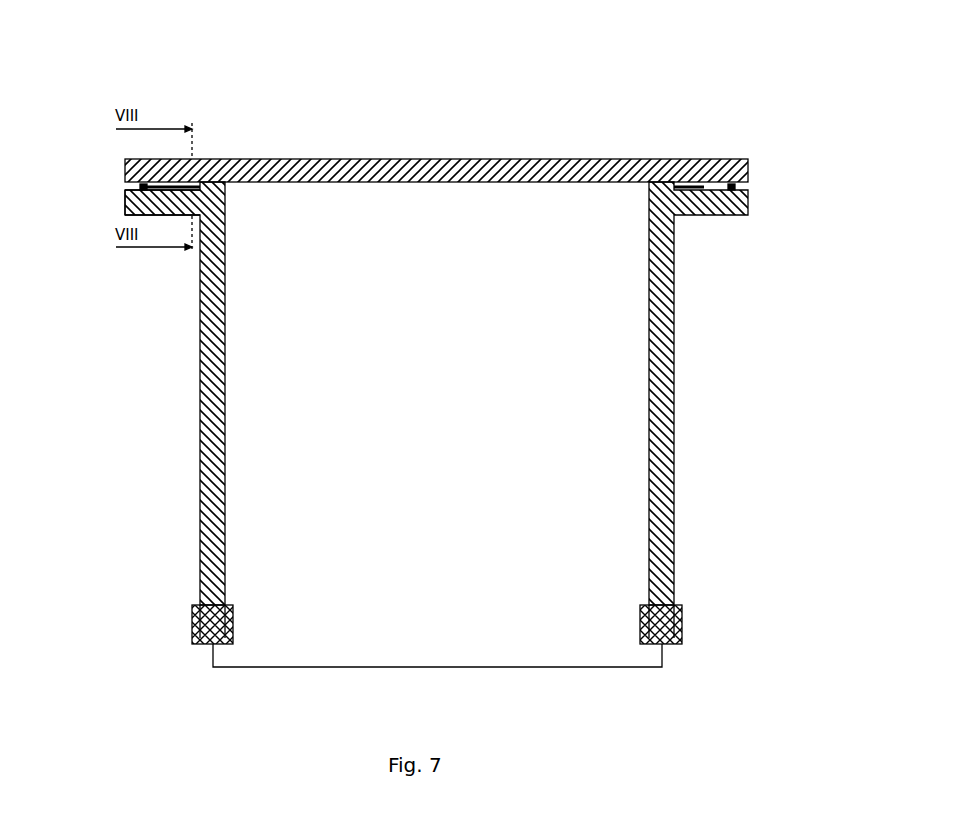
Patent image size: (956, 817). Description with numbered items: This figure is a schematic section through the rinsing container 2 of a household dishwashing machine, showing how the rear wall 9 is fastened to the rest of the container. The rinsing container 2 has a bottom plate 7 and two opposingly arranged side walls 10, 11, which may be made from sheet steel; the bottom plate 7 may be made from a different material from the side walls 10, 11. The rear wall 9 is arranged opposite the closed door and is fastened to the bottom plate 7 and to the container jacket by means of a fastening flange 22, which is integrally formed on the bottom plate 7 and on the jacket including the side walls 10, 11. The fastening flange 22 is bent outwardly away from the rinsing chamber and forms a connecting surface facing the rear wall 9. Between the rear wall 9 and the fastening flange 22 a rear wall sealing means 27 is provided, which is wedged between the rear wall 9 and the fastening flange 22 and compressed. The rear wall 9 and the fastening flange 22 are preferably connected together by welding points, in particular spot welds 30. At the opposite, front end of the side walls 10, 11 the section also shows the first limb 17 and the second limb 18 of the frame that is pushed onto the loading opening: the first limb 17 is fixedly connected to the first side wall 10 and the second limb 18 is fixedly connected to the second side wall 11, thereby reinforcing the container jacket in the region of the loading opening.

The rinsing container 2 is at (567, 108).
The bottom plate 7 is at (441, 426).
The rear wall 9 is at (422, 159).
The first side wall 10 is at (200, 420).
The second side wall 11 is at (673, 412).
The first limb 17 is at (192, 625).
The second limb 18 is at (682, 625).
The fastening flange 22 is at (125, 205).
The rear wall sealing means 27 is at (212, 183).
The spot welds 30 is at (125, 166).